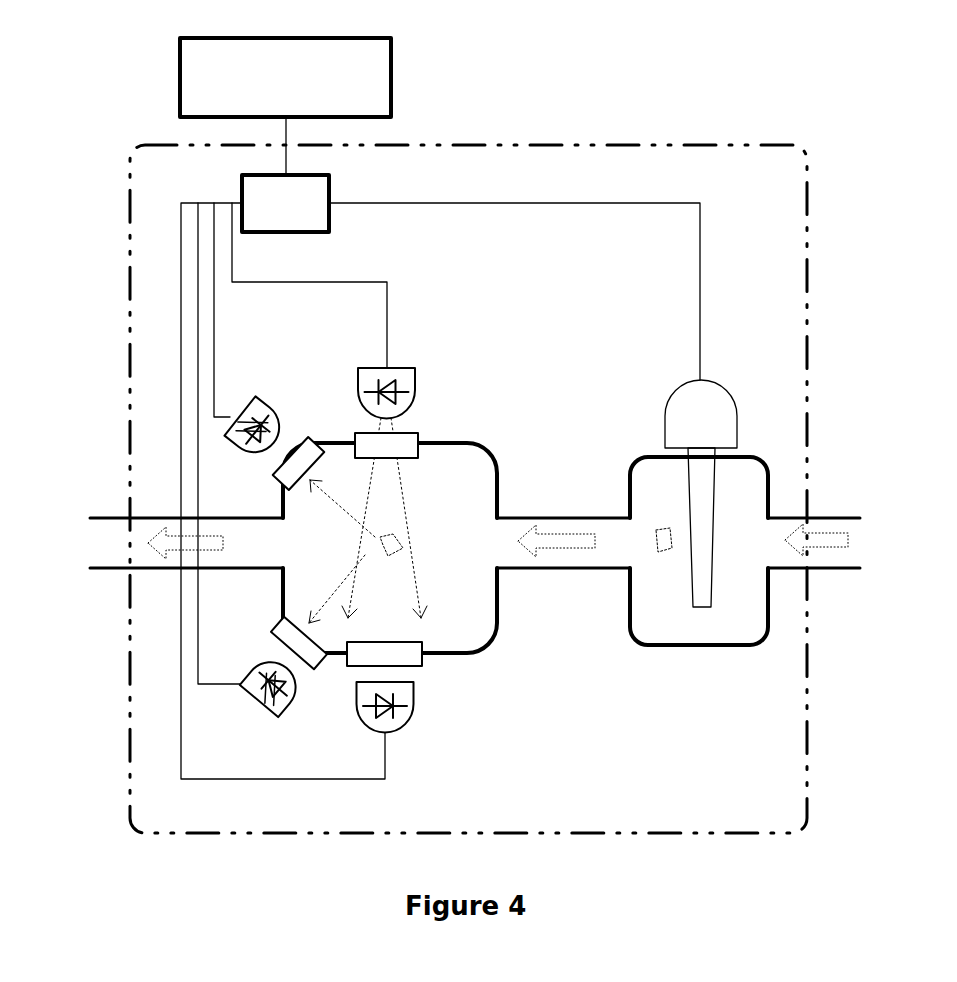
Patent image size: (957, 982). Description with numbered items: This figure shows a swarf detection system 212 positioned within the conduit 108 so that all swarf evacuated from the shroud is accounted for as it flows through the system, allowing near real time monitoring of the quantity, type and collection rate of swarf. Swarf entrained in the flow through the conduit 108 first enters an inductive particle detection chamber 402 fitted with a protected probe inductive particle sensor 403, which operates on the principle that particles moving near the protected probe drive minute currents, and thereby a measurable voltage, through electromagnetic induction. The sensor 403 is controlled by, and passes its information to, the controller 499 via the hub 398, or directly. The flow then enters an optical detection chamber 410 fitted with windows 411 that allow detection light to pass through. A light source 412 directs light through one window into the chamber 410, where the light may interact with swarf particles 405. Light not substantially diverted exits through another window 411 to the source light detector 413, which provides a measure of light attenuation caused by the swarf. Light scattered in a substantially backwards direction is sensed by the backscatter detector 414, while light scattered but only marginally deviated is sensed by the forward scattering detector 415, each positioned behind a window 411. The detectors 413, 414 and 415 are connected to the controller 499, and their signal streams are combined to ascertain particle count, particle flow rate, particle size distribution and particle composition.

The conduit 108 is at (100, 518).
The detection system 212 is at (697, 145).
The hub 398 is at (440, 477).
The inductive particle detection chamber 402 is at (750, 645).
The protected probe inductive particle sensor 403 is at (722, 385).
The swarf particles 405 is at (395, 530).
The optical detection chamber 410 is at (498, 620).
The windows 411 is at (305, 435).
The light source 412 is at (397, 367).
The source light detector 413 is at (385, 735).
The backscatter detector 414 is at (262, 402).
The forward scattering detector 415 is at (260, 702).
The controller 499 is at (285, 106).